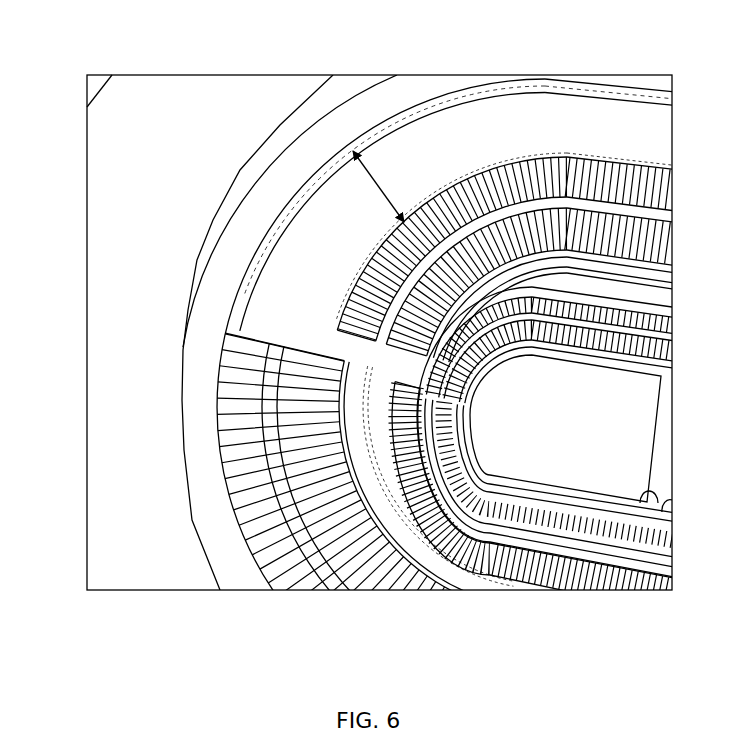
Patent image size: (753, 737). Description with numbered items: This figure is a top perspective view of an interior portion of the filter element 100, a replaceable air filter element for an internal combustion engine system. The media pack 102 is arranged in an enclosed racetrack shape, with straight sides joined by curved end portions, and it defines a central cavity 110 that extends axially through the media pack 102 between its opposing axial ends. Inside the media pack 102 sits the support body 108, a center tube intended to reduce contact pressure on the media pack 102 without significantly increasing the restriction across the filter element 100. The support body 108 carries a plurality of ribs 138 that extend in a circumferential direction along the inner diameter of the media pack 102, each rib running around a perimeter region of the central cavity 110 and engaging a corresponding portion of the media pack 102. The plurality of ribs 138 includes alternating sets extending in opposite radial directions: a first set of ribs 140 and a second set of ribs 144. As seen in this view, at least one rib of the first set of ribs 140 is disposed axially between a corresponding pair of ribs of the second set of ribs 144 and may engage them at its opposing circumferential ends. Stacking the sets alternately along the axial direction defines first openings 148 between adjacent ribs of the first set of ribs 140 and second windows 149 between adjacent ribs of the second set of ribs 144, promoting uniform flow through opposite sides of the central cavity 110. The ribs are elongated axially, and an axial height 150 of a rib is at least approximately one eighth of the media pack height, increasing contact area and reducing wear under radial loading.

The filter element 100 is at (126, 43).
The support body 108 is at (227, 102).
The plurality of ribs 138 is at (324, 246).
The central cavity 110 is at (299, 389).
The media pack 102 is at (295, 531).
The second windows 149 is at (347, 566).
The axial height 150 is at (378, 185).
The first openings 148 is at (615, 182).
The first set of ribs 140 is at (543, 105).
The second set of ribs 144 is at (440, 538).